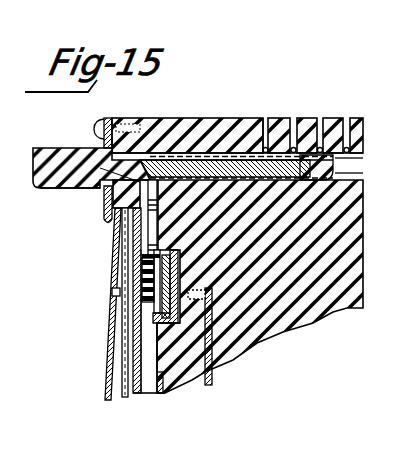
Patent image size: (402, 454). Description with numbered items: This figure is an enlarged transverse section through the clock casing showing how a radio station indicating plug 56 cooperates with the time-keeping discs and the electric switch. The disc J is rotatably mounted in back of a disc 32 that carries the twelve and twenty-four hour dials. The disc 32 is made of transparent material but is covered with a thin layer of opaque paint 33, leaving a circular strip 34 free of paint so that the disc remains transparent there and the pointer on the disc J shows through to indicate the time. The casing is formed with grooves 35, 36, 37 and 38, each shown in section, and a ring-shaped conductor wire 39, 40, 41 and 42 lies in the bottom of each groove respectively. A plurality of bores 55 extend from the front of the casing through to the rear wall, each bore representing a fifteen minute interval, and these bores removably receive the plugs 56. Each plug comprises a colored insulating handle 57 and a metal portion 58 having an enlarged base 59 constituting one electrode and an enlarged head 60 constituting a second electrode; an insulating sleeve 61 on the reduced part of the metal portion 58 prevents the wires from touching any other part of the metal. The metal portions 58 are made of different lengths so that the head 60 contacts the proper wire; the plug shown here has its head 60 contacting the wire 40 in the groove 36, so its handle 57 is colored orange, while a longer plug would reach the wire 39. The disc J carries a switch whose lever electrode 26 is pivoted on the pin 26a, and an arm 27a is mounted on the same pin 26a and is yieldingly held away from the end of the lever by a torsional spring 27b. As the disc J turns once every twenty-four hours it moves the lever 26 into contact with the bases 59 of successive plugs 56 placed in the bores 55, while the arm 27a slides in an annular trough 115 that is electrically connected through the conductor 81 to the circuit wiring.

The bore 55 is at (357, 176).
The insulating sleeve 61 is at (182, 130).
The enlarged base 59 is at (157, 150).
The groove 38 is at (268, 118).
The groove 37 is at (297, 118).
The groove 36 is at (322, 118).
The groove 35 is at (355, 102).
The ring-shaped conductor wire 42 is at (265, 150).
The ring-shaped conductor wire 41 is at (293, 150).
The ring-shaped conductor wire 40 is at (327, 152).
The ring-shaped conductor wire 39 is at (350, 153).
The enlarged head 60 is at (335, 172).
The radio station indicating plug 56 is at (60, 147).
The insulating handle 57 is at (53, 188).
The metal portion 58 is at (95, 170).
The lever electrode 26 is at (150, 216).
The opaque paint 33 is at (118, 342).
The disc 32 is at (127, 397).
The torsional spring 27b is at (158, 257).
The circular strip 34 is at (160, 270).
The pivot pin 26a is at (110, 292).
The switch arm 27a is at (157, 311).
The annular trough 115 is at (175, 332).
The disc J is at (143, 372).
The conductor 81 is at (212, 360).